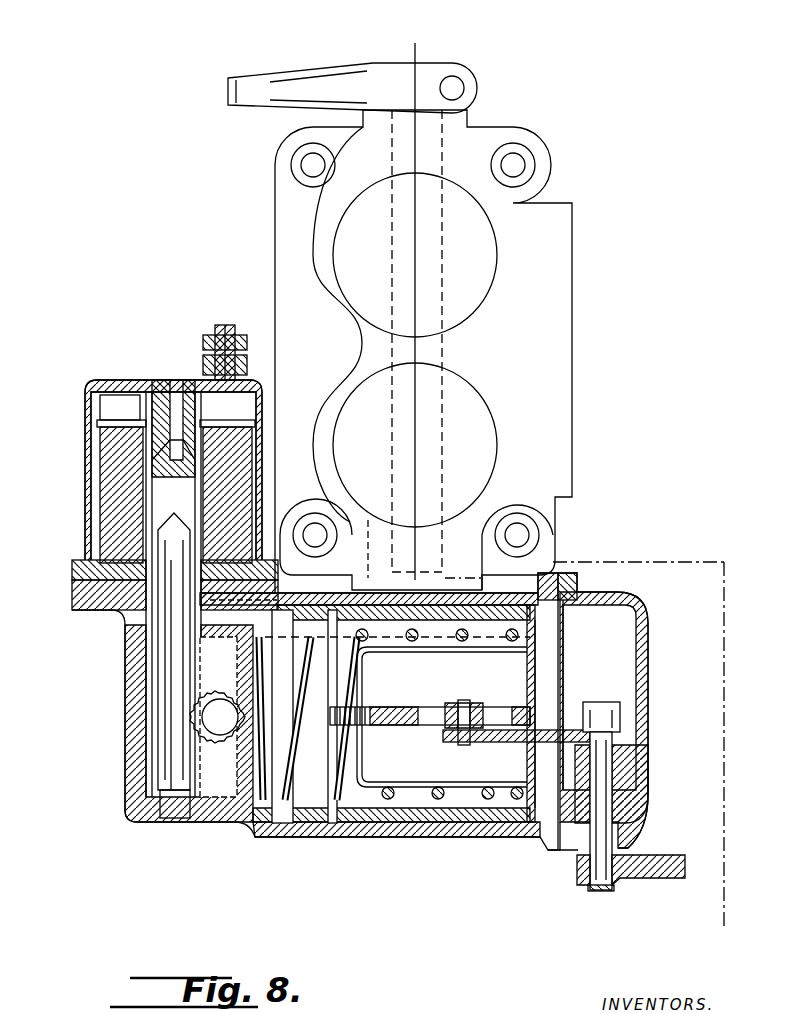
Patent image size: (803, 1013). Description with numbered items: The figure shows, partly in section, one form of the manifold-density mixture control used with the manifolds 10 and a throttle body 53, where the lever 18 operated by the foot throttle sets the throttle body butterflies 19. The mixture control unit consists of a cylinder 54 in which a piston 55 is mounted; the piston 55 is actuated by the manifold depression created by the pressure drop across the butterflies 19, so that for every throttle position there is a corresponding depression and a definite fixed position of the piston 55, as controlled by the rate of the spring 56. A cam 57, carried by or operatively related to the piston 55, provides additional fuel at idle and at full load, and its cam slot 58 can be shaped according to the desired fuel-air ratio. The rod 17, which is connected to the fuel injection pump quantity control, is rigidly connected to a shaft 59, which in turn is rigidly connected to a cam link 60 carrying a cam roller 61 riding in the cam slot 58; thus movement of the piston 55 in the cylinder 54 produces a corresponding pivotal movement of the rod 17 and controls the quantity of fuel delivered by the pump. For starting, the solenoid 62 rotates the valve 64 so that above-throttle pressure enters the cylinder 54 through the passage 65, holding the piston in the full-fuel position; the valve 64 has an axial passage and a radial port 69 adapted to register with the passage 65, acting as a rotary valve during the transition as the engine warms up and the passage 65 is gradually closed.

The manifolds 10 is at (345, 45).
The rod 17 is at (655, 862).
The lever 18 is at (300, 92).
The throttle body butterfly 19 is at (415, 350).
The throttle body 53 is at (423, 351).
The cylinder 54 is at (485, 830).
The piston 55 is at (350, 835).
The spring 56 is at (290, 747).
The cam 57 is at (393, 712).
The cam slot 58 is at (430, 712).
The shaft 59 is at (605, 760).
The cam link 60 is at (506, 742).
The cam roller 61 is at (480, 705).
The solenoid 62 is at (113, 443).
The valve 64 is at (217, 717).
The passage 65 is at (375, 535).
The radial port 69 is at (150, 660).